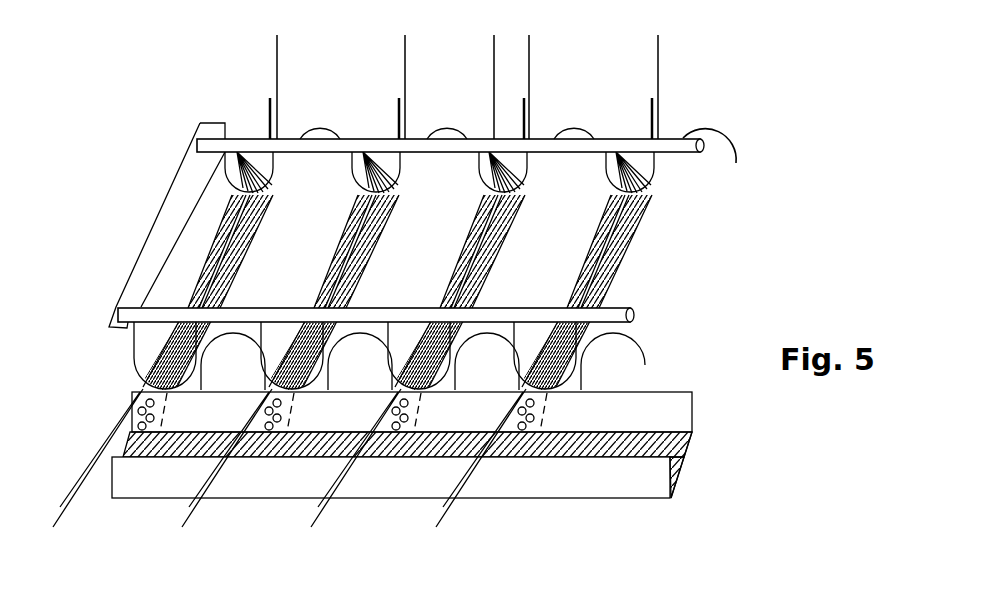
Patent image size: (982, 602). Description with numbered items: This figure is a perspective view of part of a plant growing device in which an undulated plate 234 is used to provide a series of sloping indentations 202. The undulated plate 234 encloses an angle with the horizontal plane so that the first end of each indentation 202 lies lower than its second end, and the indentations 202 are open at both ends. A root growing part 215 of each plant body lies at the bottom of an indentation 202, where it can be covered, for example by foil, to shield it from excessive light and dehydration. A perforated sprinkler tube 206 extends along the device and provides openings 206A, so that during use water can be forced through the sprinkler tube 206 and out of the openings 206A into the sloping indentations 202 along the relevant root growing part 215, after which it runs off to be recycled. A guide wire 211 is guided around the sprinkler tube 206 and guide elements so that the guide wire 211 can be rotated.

The indentation 202 is at (346, 213).
The sprinkler tube 206 is at (464, 77).
The opening 206A is at (628, 150).
The guide wire 211 is at (660, 62).
The root growing part 215 is at (603, 248).
The undulated plate 234 is at (188, 245).